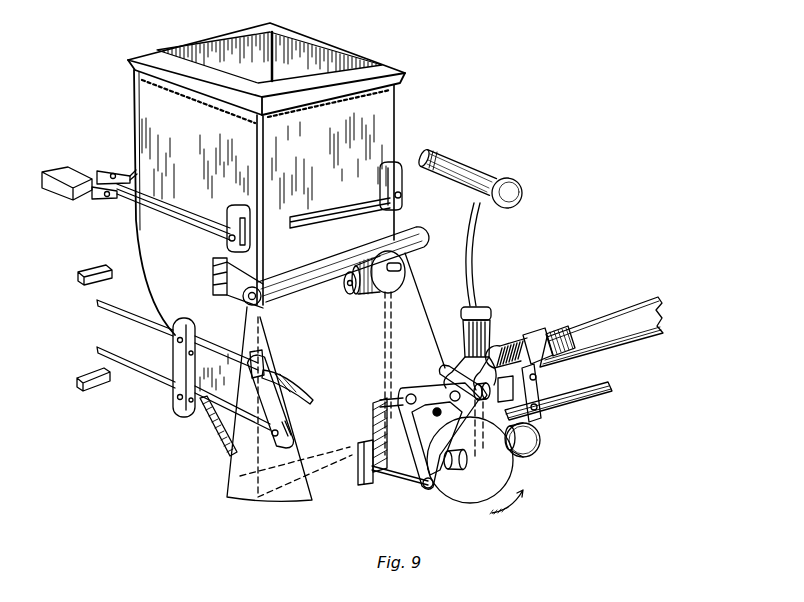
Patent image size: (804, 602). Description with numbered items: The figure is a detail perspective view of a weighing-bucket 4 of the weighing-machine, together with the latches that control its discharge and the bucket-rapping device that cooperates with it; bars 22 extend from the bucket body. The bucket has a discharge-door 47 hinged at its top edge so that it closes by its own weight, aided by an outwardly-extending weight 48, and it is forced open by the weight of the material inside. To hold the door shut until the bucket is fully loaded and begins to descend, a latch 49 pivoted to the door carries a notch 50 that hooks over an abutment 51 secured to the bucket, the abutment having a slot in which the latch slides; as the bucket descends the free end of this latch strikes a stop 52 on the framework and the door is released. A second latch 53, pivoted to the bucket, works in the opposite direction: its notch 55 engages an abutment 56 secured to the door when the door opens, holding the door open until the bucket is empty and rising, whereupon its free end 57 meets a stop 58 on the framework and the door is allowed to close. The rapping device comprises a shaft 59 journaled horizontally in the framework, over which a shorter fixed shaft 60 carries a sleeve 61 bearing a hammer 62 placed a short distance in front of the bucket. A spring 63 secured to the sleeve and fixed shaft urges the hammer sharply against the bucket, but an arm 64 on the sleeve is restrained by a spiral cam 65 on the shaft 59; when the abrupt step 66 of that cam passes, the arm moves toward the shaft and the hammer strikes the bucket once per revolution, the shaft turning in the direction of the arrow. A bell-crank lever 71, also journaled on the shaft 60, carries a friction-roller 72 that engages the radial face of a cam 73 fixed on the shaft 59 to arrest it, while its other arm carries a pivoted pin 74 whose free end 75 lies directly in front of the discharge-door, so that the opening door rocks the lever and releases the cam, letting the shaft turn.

The hopper 4 is at (266, 262).
The bars 22 is at (222, 207).
The discharge-door 47 is at (321, 305).
The weight 48 is at (395, 275).
The latch 49 is at (153, 377).
The notch 50 is at (203, 413).
The abutment 51 is at (177, 340).
The stop 52 is at (93, 392).
The latch 53 is at (208, 352).
The notch 55 is at (277, 380).
The abutment 56 is at (280, 408).
The free end 57 is at (135, 307).
The stop 58 is at (92, 265).
The shaft 59 is at (570, 412).
The fixed shaft 60 is at (550, 334).
The sleeve 61 is at (487, 361).
The hammer 62 is at (470, 158).
The spring 63 is at (547, 341).
The arm 64 is at (509, 388).
The cam 65 is at (538, 461).
The step 66 is at (512, 400).
The bell-crank lever 71 is at (420, 390).
The friction-roller 72 is at (470, 378).
The cam 73 is at (466, 498).
The pin 74 is at (400, 488).
The free end 75 is at (348, 460).